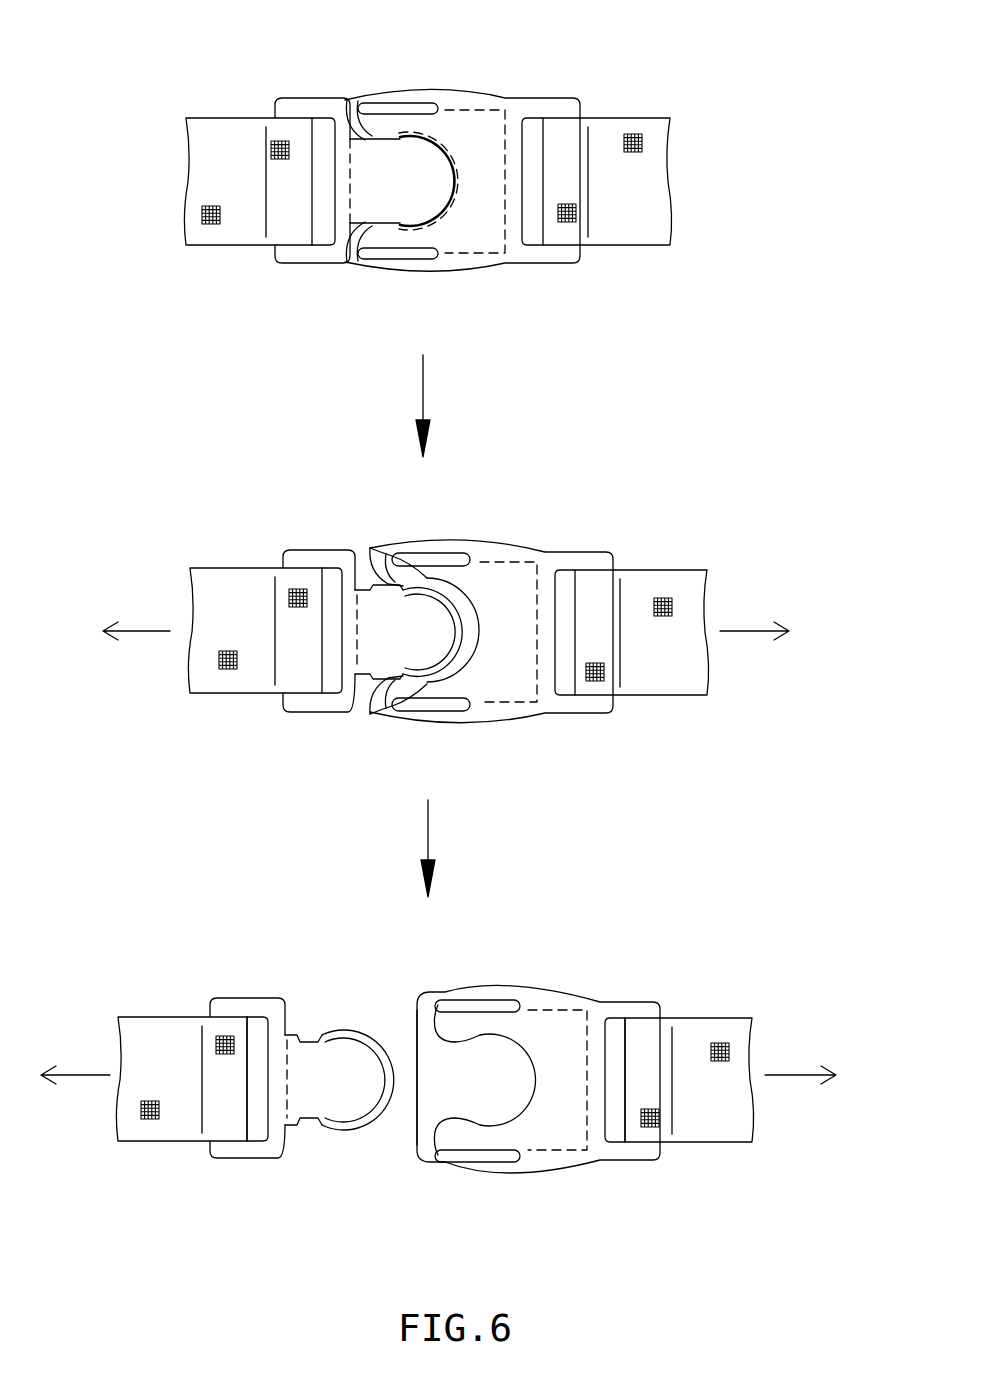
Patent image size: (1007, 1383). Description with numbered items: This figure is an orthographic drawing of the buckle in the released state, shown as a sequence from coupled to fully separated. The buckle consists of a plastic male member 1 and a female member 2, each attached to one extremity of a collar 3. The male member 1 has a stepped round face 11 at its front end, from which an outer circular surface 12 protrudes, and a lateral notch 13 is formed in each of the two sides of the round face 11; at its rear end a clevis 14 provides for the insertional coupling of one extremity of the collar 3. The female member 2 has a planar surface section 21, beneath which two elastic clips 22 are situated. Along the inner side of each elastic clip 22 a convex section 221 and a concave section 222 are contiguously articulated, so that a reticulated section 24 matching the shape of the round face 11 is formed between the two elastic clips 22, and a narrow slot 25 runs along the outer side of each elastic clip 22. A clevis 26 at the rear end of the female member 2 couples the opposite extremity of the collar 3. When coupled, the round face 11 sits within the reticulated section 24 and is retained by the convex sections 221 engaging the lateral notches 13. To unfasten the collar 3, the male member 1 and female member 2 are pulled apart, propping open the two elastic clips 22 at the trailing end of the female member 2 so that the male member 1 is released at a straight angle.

The male member 1 is at (305, 265).
The round face 11 is at (434, 202).
The outer circular surface 12 is at (442, 138).
The lateral notch 13 is at (367, 580).
The clevis 14 is at (260, 1135).
The female member 2 is at (518, 98).
The surface section 21 is at (417, 1160).
The elastic clip 22 is at (514, 1033).
The convex section 221 is at (378, 132).
The concave section 222 is at (458, 194).
The reticulated section 24 is at (478, 1083).
The narrow slot 25 is at (454, 558).
The clevis 26 is at (611, 1030).
The collar 3 is at (217, 134).